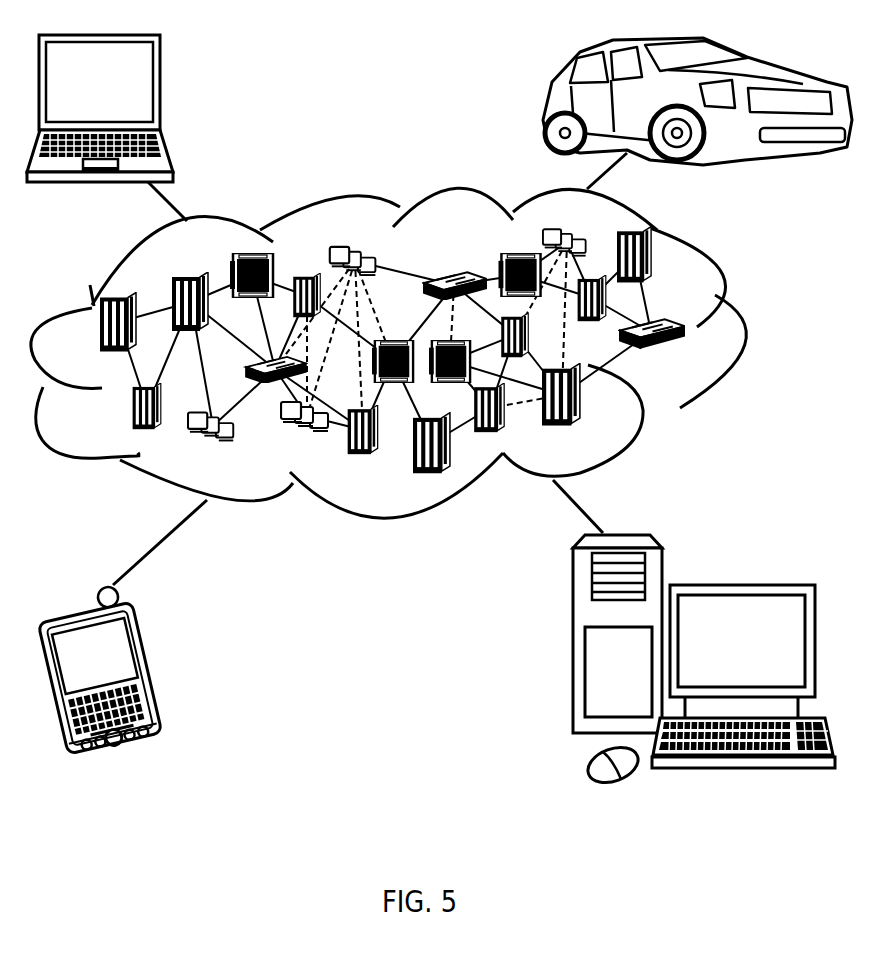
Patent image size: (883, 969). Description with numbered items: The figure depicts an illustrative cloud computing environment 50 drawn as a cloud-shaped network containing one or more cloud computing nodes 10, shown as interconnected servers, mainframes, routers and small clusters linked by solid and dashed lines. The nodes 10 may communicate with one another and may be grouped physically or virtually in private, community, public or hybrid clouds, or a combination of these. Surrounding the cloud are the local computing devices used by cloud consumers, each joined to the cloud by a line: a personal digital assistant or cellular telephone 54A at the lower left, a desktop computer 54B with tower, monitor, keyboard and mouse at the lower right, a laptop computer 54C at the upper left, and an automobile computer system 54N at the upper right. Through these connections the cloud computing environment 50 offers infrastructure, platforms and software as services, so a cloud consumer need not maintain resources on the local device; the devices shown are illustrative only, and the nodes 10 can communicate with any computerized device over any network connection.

The cloud computing node 10 is at (765, 323).
The cloud computing environment 50 is at (411, 353).
The personal digital assistant or cellular telephone 54A is at (150, 668).
The desktop computer 54B is at (740, 584).
The laptop computer 54C is at (160, 88).
The automobile computer system 54N is at (545, 103).